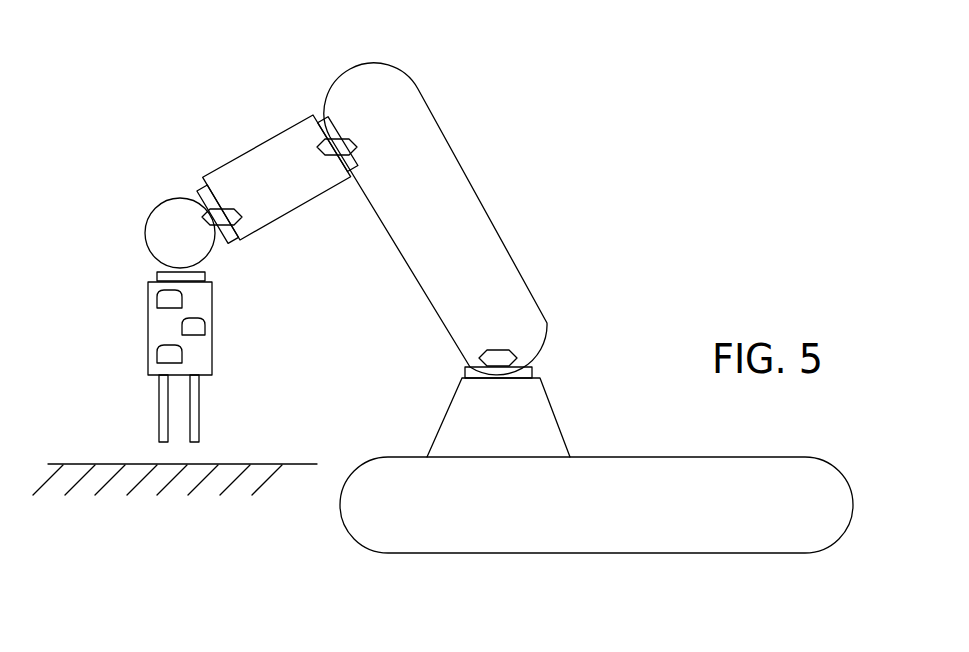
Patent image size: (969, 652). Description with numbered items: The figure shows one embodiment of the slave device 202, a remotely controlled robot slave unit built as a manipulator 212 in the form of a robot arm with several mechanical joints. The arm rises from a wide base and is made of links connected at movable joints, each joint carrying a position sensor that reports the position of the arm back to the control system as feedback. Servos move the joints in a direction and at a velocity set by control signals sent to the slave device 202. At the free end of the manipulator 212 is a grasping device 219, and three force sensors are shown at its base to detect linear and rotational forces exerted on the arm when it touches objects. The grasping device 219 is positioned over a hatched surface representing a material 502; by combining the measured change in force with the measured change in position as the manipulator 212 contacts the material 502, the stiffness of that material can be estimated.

The slave device 202 is at (663, 297).
The manipulator 212 is at (181, 122).
The grasping device 219 is at (232, 417).
The material 502 is at (97, 462).